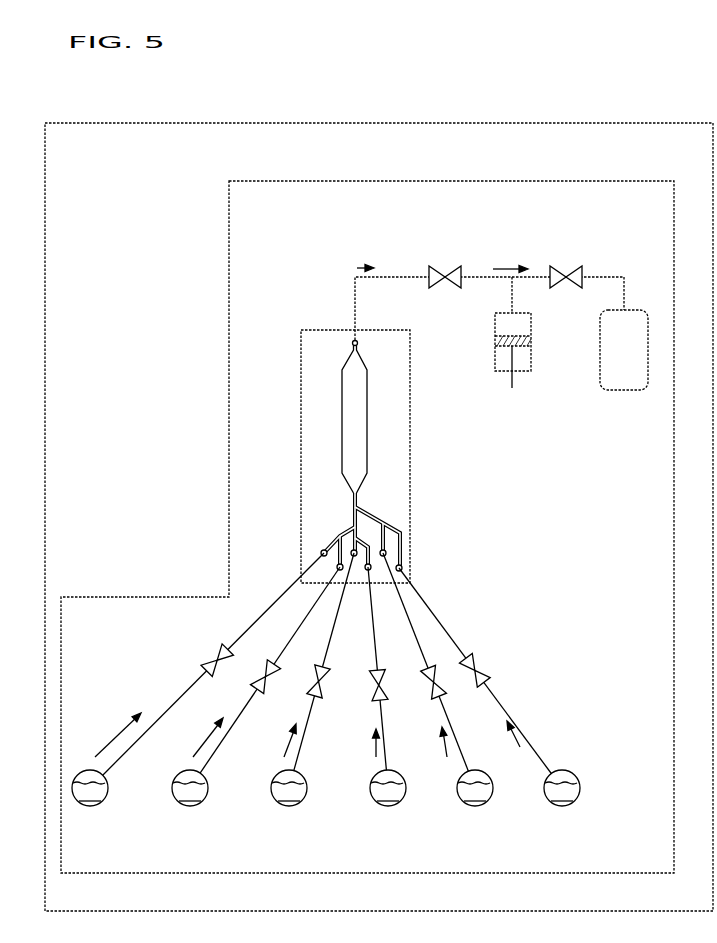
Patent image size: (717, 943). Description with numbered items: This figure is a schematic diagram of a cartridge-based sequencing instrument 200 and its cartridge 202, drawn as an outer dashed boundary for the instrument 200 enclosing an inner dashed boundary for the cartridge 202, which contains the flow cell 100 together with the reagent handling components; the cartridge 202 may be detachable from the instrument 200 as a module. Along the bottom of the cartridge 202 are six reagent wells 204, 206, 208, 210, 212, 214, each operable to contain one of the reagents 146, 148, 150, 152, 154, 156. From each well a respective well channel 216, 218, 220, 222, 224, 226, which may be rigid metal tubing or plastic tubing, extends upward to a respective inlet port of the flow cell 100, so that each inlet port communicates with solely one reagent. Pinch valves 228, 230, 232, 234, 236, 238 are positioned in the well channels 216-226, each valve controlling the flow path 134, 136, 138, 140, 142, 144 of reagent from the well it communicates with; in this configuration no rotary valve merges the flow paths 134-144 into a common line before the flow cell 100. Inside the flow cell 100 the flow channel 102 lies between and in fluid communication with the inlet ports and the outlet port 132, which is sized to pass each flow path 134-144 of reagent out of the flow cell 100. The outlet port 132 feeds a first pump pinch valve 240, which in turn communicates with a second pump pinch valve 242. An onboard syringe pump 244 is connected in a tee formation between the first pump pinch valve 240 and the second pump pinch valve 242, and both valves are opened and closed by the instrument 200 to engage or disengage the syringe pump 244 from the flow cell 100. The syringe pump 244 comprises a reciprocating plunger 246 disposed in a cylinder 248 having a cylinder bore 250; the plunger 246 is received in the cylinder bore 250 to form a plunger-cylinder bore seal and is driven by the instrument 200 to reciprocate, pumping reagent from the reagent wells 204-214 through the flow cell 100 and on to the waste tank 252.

The flow cell 100 is at (296, 431).
The flow channel 102 is at (342, 386).
The outlet port 132 is at (355, 340).
The flow path 134 is at (112, 742).
The flow path 136 is at (202, 740).
The flow path 138 is at (287, 748).
The flow path 140 is at (377, 752).
The flow path 142 is at (450, 752).
The flow path 144 is at (519, 744).
The flow paths 134-144 is at (346, 289).
The reagent 146 is at (89, 791).
The reagent 148 is at (189, 791).
The reagent 150 is at (288, 791).
The reagent 152 is at (387, 791).
The reagent 154 is at (474, 791).
The reagent 156 is at (561, 791).
The instrument 200 is at (490, 112).
The cartridge 202 is at (588, 174).
The reagent well 204 is at (107, 800).
The reagent well 206 is at (206, 800).
The reagent well 208 is at (305, 800).
The reagent well 210 is at (405, 800).
The reagent well 212 is at (492, 798).
The reagent well 214 is at (578, 798).
The well channel 216 is at (186, 692).
The well channel 218 is at (244, 701).
The well channel 220 is at (307, 710).
The well channel 222 is at (380, 715).
The well channel 224 is at (450, 712).
The well channel 226 is at (494, 693).
The valve 228 is at (213, 648).
The valve 230 is at (266, 670).
The valve 232 is at (314, 675).
The valve 234 is at (372, 681).
The valve 236 is at (428, 676).
The valve 238 is at (480, 662).
The first pump pinch valve 240 is at (444, 268).
The second pump pinch valve 242 is at (566, 268).
The syringe pump 244 is at (508, 368).
The plunger 246 is at (523, 348).
The cylinder 248 is at (495, 361).
The cylinder bore 250 is at (504, 325).
The waste tank 252 is at (615, 391).